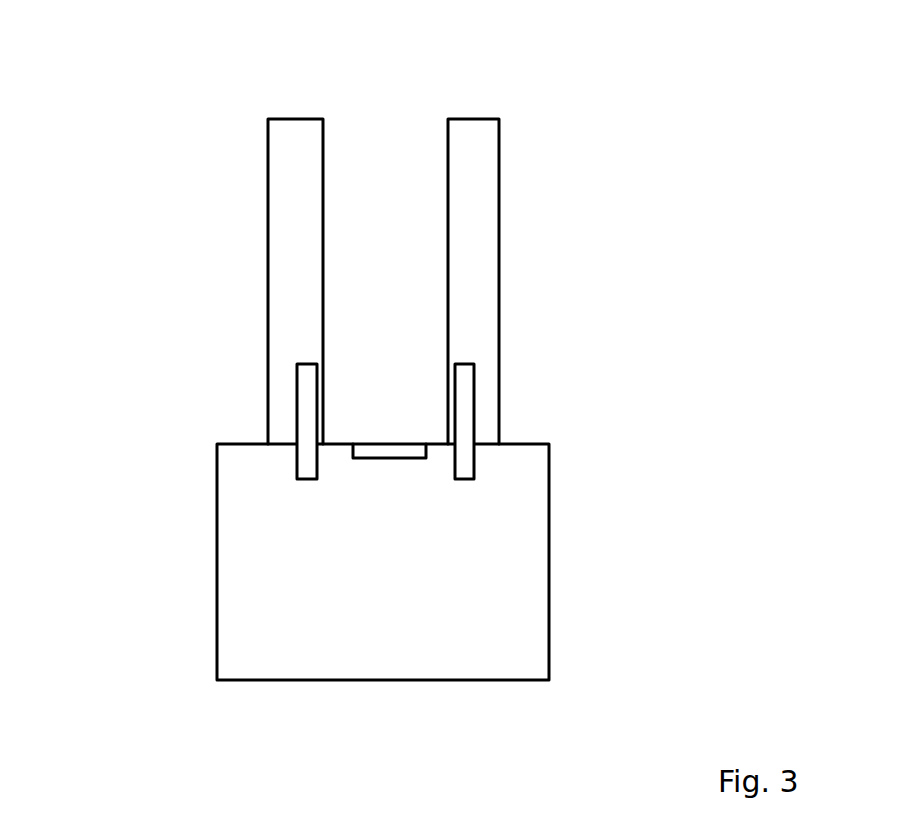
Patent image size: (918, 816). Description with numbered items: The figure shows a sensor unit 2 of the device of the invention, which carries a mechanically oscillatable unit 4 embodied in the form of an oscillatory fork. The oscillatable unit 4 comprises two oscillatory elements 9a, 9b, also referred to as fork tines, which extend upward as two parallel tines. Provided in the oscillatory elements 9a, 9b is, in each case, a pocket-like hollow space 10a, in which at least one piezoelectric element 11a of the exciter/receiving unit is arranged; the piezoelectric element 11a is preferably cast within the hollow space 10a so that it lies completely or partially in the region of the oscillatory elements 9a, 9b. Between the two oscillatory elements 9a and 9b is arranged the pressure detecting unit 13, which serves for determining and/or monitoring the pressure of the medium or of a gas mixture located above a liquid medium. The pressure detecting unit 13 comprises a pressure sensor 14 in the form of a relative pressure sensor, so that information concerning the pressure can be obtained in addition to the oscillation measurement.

The sensor unit 2 is at (33, 92).
The mechanically oscillatable unit 4 is at (115, 235).
The oscillatory element 9a is at (272, 170).
The oscillatory element 9b is at (490, 143).
The hollow space 10a is at (302, 373).
The piezoelectric element 11a is at (305, 410).
The pressure detecting unit 13 is at (412, 517).
The pressure sensor 14 is at (403, 450).